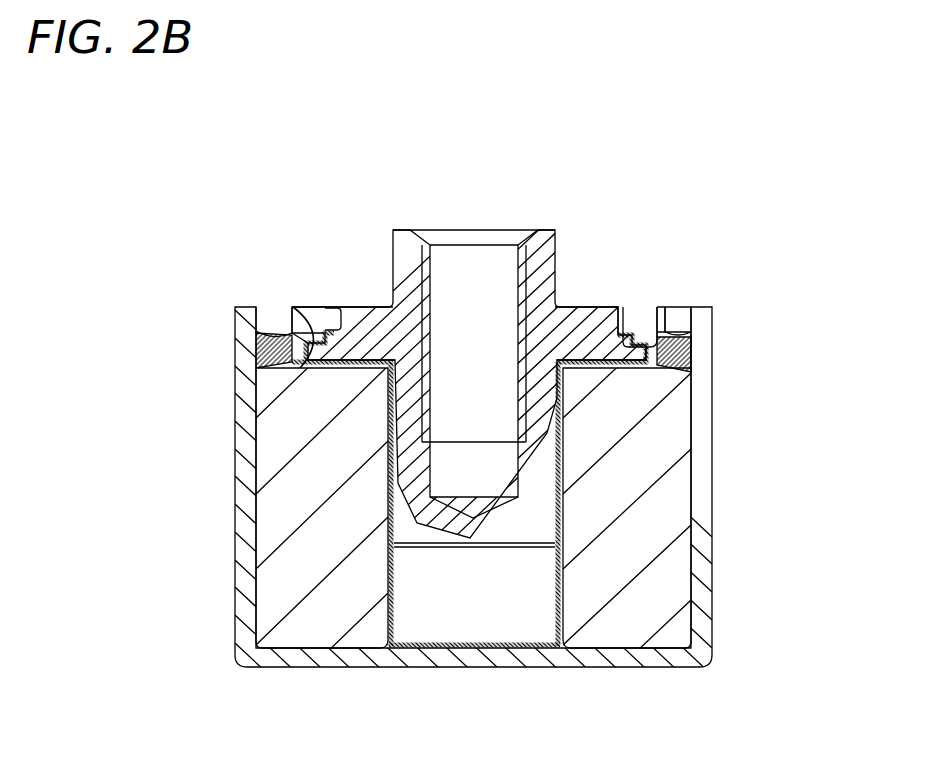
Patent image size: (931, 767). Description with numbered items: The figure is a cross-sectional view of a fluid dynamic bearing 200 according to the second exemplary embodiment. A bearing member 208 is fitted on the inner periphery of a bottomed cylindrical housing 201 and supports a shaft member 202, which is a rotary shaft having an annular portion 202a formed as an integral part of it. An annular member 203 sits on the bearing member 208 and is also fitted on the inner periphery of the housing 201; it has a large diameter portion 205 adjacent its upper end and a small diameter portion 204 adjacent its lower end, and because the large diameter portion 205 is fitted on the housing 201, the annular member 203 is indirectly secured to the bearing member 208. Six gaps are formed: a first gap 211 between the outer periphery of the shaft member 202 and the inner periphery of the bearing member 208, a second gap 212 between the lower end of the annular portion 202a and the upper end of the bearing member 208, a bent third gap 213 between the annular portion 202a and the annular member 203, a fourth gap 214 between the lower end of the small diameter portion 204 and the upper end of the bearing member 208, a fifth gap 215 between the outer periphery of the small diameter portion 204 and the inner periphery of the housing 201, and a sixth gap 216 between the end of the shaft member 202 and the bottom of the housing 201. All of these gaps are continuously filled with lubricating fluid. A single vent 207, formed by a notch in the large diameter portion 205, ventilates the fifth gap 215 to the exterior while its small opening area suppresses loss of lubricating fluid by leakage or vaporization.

The fluid dynamic bearing 200 is at (403, 221).
The housing 201 is at (701, 588).
The shaft member 202 is at (540, 247).
The annular portion 202a is at (577, 322).
The annular member 203 is at (638, 327).
The small diameter portion 204 is at (657, 323).
The large diameter portion 205 is at (274, 307).
The vent 207 is at (687, 298).
The bearing member 208 is at (675, 519).
The first gap 211 is at (563, 494).
The second gap 212 is at (600, 367).
The third gap 213 is at (310, 307).
The fourth gap 214 is at (302, 368).
The fifth gap 215 is at (700, 340).
The sixth gap 216 is at (450, 650).